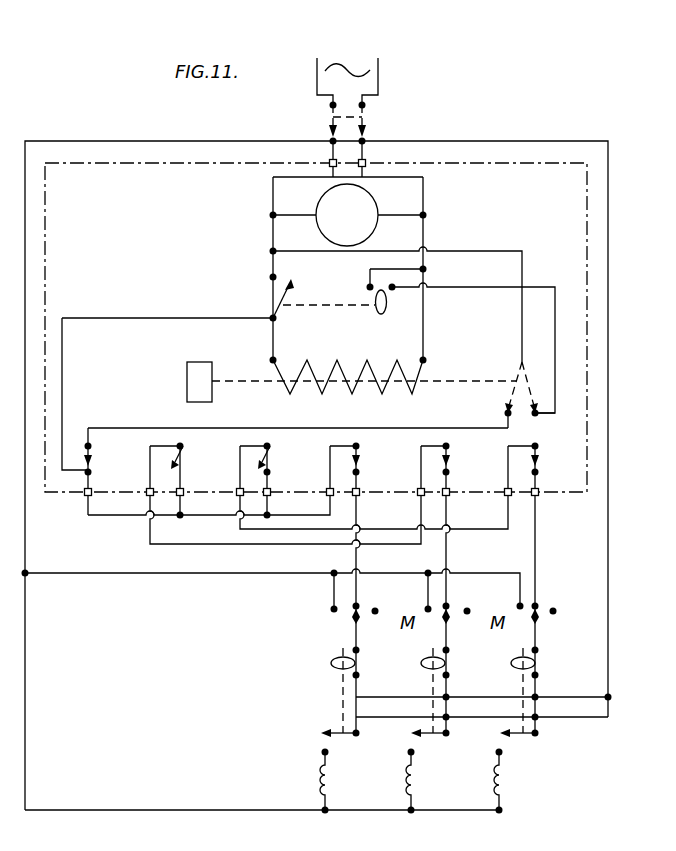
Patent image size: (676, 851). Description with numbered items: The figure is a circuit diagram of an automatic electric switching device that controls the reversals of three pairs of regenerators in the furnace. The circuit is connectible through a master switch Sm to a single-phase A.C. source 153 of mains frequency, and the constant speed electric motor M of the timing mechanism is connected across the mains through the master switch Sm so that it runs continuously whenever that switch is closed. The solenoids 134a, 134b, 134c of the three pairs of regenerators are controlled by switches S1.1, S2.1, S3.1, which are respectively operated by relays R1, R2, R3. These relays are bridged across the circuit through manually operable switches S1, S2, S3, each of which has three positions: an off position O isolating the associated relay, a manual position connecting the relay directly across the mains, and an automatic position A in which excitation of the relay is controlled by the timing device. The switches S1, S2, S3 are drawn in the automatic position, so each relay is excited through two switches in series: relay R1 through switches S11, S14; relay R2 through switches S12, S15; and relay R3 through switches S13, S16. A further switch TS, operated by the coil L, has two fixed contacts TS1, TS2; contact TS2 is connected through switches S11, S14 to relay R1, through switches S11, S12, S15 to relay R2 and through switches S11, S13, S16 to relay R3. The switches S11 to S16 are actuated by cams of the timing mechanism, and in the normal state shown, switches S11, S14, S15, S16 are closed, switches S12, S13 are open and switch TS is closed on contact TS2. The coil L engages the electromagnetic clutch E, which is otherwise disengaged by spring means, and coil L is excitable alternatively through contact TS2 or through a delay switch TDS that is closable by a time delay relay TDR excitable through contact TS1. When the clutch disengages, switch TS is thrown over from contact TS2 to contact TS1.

The A.C. source 153 is at (347, 69).
The master switch Sm is at (368, 120).
The constant speed electric motor M is at (348, 211).
The delay switch TDS is at (262, 298).
The time delay relay TDR is at (419, 340).
The electromagnetic clutch E is at (351, 382).
The coil L is at (348, 389).
The switch TS is at (527, 387).
The fixed contact TS1 is at (551, 426).
The fixed contact TS2 is at (480, 413).
The switch S11 is at (107, 471).
The switch S12 is at (186, 481).
The switch S13 is at (274, 481).
The switch S14 is at (363, 525).
The switch S15 is at (454, 525).
The switch S16 is at (541, 525).
The automatic position A is at (443, 596).
The off position O is at (474, 612).
The manually operable switch S1 is at (369, 670).
The manually operable switch S2 is at (459, 670).
The manually operable switch S3 is at (548, 670).
The relay R1 is at (333, 690).
The relay R2 is at (423, 690).
The relay R3 is at (513, 690).
The switch S1.1 is at (362, 740).
The switch S2.1 is at (452, 740).
The switch S3.1 is at (546, 740).
The solenoid 134a is at (351, 781).
The solenoid 134b is at (438, 781).
The solenoid 134c is at (525, 781).